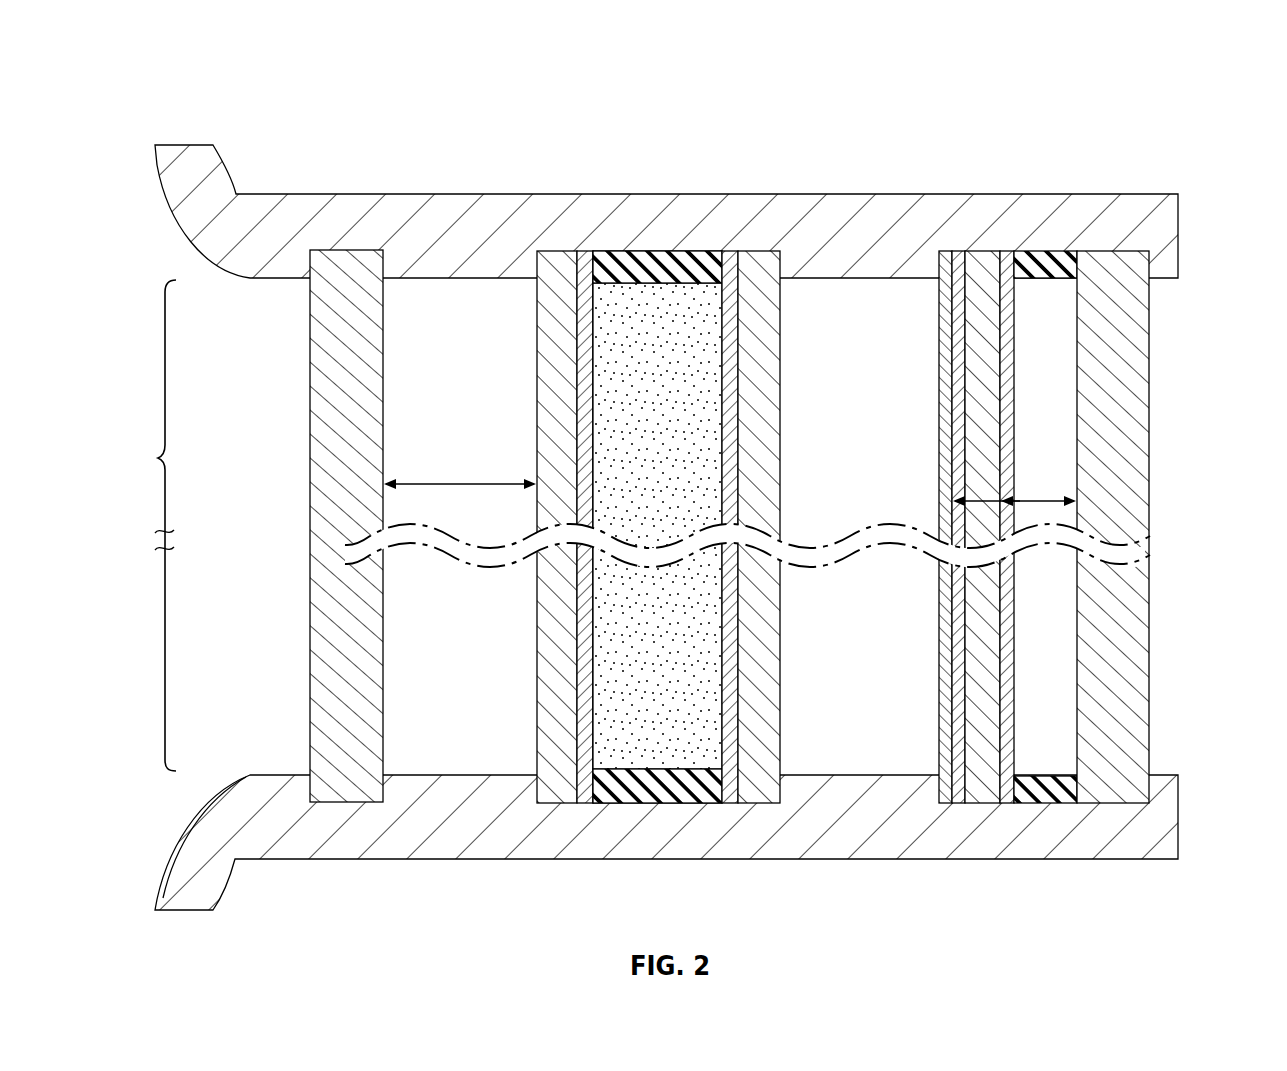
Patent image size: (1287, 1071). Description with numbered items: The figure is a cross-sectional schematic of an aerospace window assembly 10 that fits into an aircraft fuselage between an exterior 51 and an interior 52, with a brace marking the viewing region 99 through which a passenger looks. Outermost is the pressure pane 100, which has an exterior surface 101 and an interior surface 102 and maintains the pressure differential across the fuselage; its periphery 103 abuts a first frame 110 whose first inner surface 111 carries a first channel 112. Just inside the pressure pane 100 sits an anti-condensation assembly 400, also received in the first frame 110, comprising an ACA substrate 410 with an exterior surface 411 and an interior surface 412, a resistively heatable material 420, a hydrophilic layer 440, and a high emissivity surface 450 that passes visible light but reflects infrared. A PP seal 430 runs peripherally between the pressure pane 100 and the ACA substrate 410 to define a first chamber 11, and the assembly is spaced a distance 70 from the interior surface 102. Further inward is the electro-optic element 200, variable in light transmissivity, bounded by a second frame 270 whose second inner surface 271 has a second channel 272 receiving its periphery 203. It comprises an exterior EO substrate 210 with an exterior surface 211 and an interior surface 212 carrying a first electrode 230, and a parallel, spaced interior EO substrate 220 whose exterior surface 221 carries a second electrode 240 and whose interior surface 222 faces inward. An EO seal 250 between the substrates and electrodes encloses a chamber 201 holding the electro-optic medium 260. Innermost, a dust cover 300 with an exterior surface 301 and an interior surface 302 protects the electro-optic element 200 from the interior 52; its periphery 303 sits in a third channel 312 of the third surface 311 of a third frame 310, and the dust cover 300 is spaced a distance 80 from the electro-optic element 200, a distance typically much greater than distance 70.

The aerospace window assembly 10 is at (1180, 115).
The first chamber 11 is at (1056, 605).
The exterior 51 is at (1214, 536).
The interior 52 is at (254, 540).
The distance 70 is at (1014, 485).
The distance 80 is at (460, 468).
The viewing region 99 is at (151, 525).
The pressure pane 100 is at (1120, 322).
The exterior surface 101 is at (1150, 445).
The interior surface 102 is at (1082, 728).
The periphery 103 is at (1120, 246).
The first frame 110 is at (1025, 222).
The first inner surface 111 is at (1178, 270).
The first channel 112 is at (976, 264).
The electro-optic element 200 is at (660, 508).
The chamber 201 is at (678, 605).
The periphery 203 is at (662, 250).
The exterior EO substrate 210 is at (760, 620).
The exterior surface 211 is at (740, 655).
The interior surface 212 is at (738, 700).
The interior EO substrate 220 is at (558, 305).
The exterior surface 221 is at (580, 340).
The interior surface 222 is at (555, 372).
The first electrode 230 is at (730, 722).
The second electrode 240 is at (585, 405).
The EO seal 250 is at (656, 803).
The electro-optic medium 260 is at (672, 712).
The second frame 270 is at (635, 228).
The second inner surface 271 is at (542, 262).
The second channel 272 is at (580, 255).
The dust cover 300 is at (355, 365).
The exterior surface 301 is at (380, 315).
The interior surface 302 is at (310, 398).
The periphery 303 is at (342, 800).
The third frame 310 is at (268, 228).
The third surface 311 is at (430, 268).
The third channel 312 is at (343, 248).
The anti-condensation assembly 400 is at (971, 594).
The ACA substrate 410 is at (950, 295).
The exterior surface 411 is at (968, 333).
The interior surface 412 is at (960, 400).
The resistively heatable material 420 is at (965, 435).
The PP seal 430 is at (1042, 800).
The hydrophilic layer 440 is at (948, 468).
The high emissivity surface 450 is at (1010, 373).